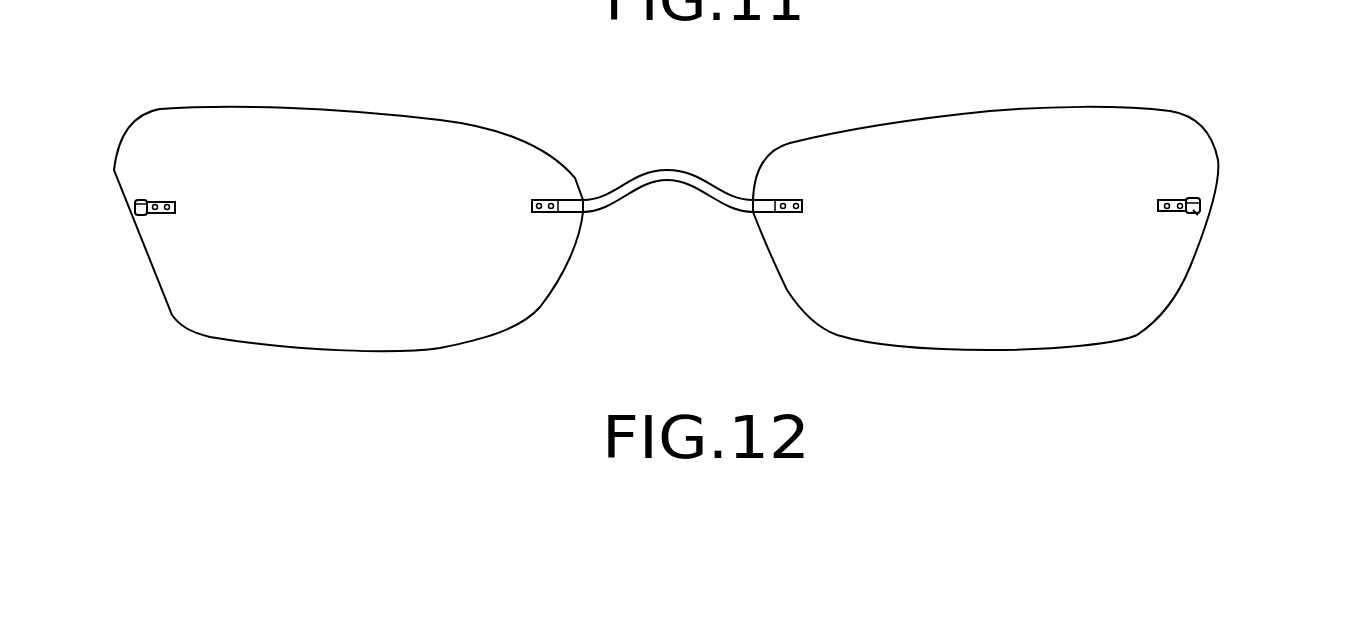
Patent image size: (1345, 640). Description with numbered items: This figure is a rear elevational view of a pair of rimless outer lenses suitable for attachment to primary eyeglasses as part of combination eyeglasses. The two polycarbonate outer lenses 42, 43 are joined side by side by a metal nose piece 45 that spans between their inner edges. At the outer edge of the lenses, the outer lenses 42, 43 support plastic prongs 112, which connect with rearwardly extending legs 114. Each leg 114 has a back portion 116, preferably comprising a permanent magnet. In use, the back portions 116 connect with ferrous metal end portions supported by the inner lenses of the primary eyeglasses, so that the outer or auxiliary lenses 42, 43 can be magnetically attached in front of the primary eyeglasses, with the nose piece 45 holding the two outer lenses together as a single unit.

The outer lens 42 is at (263, 157).
The outer lens 43 is at (948, 178).
The nose piece 45 is at (658, 168).
The plastic prong 112 is at (1172, 198).
The rearwardly extending leg 114 is at (1190, 200).
The back portion 116 is at (1198, 215).